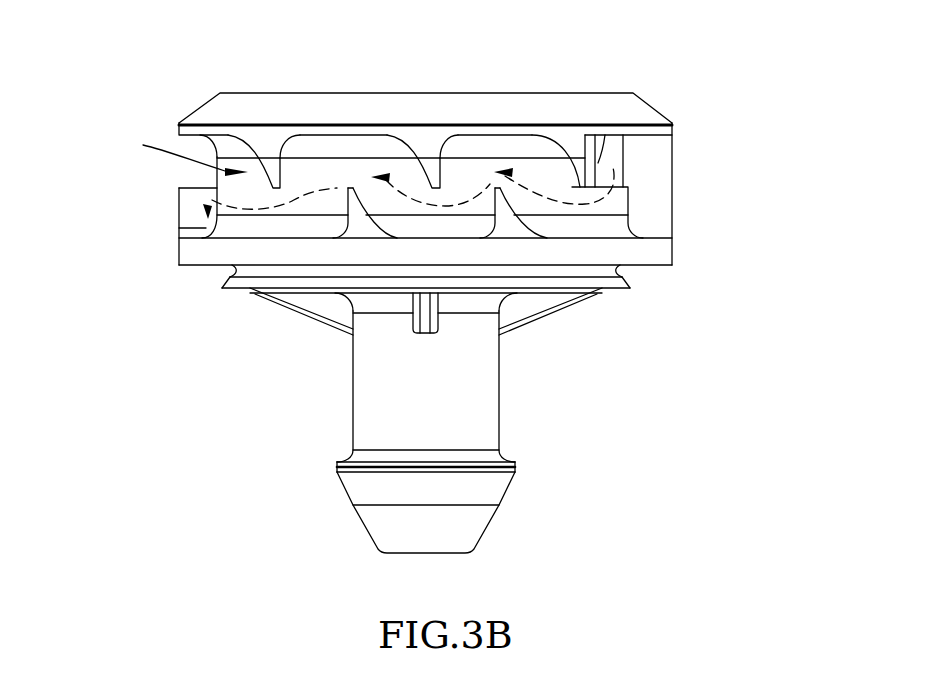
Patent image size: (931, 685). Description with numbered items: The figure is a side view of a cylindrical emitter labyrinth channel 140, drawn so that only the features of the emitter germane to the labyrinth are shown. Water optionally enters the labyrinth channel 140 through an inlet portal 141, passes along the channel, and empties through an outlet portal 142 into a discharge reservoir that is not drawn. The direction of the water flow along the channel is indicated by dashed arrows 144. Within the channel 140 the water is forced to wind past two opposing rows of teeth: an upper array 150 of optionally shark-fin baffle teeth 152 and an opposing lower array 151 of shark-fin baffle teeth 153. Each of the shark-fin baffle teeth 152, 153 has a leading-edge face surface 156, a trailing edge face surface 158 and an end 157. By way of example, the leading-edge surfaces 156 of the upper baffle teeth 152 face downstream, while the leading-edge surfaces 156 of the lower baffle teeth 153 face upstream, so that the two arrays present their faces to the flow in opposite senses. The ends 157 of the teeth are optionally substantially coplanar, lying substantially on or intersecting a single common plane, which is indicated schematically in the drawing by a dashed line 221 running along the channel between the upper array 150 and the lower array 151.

The labyrinth channel 140 is at (175, 153).
The inlet portal 141 is at (598, 153).
The outlet portal 142 is at (193, 200).
The dashed arrows 144 is at (628, 188).
The upper array 150 is at (180, 30).
The lower array 151 is at (590, 350).
The shark-fin baffle teeth 152 is at (430, 152).
The shark-fin baffle teeth 153 is at (365, 234).
The leading-edge face surfaces 156 is at (520, 162).
The ends 157 is at (498, 186).
The trailing edge face surfaces 158 is at (441, 140).
The dashed line 221 is at (340, 163).